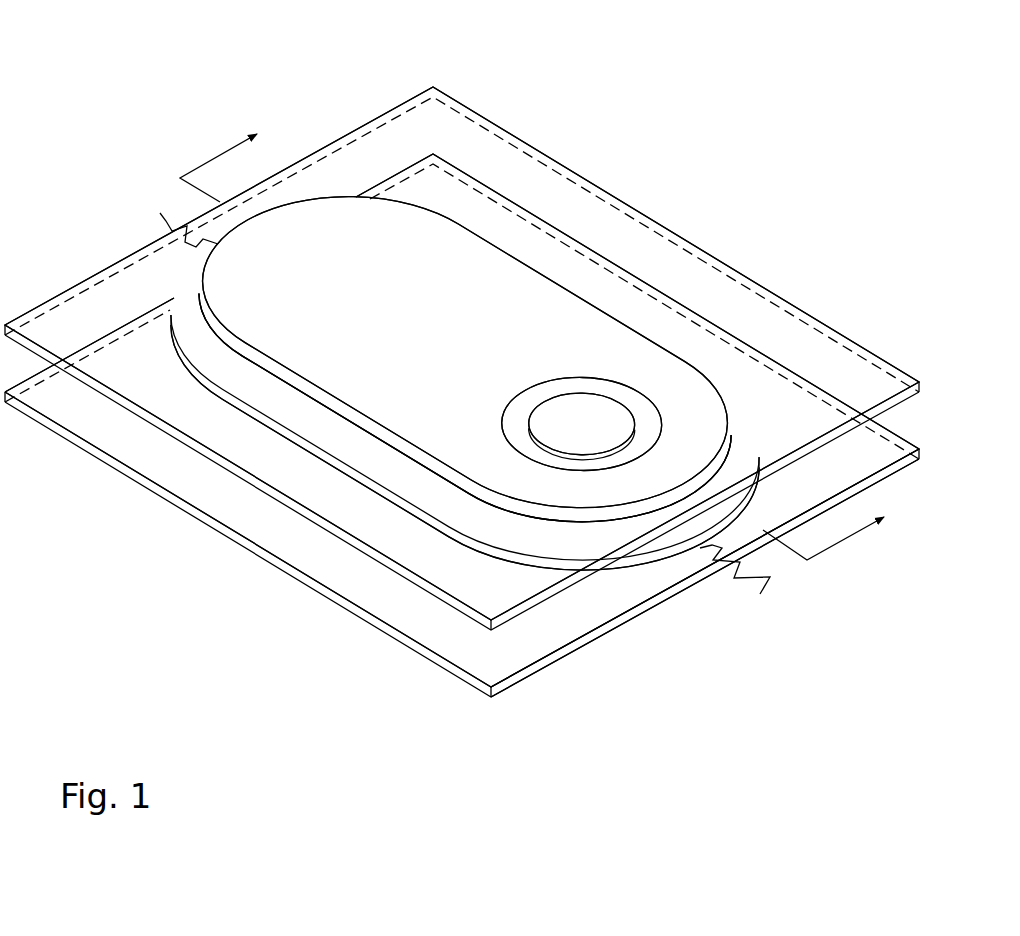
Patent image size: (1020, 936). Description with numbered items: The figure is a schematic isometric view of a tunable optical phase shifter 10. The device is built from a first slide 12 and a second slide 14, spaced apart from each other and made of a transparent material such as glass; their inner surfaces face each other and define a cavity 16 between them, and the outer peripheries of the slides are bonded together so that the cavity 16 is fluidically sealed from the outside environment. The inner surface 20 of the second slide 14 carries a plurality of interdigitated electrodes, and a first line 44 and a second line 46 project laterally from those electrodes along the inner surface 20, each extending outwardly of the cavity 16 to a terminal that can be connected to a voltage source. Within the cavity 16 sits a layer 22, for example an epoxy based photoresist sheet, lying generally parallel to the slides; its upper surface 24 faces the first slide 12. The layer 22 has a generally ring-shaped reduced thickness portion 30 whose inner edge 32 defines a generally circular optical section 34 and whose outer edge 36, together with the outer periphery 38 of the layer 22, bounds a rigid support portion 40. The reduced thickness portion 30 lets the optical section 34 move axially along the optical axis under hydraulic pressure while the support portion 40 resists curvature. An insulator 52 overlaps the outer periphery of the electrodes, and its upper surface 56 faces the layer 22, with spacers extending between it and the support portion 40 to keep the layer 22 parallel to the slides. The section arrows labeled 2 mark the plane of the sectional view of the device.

The section line 2- 2 is at (542, 334).
The optical phase shifter 10 is at (532, 106).
The first slide 12 is at (417, 91).
The second slide 14 is at (290, 563).
The cavity 16 is at (526, 641).
The inner surface 20 is at (126, 434).
The layer 22 is at (508, 251).
The upper surface 24 is at (411, 324).
The reduced thickness portion 30 is at (517, 410).
The inner edge 32 is at (532, 436).
The optical section 34 is at (573, 395).
The outer edge 36 is at (617, 380).
The outer periphery 38 is at (348, 196).
The support portion 40 is at (272, 364).
The first line 44 is at (160, 222).
The second line 46 is at (765, 590).
The insulator 52 is at (356, 476).
The upper surface 56 is at (394, 471).